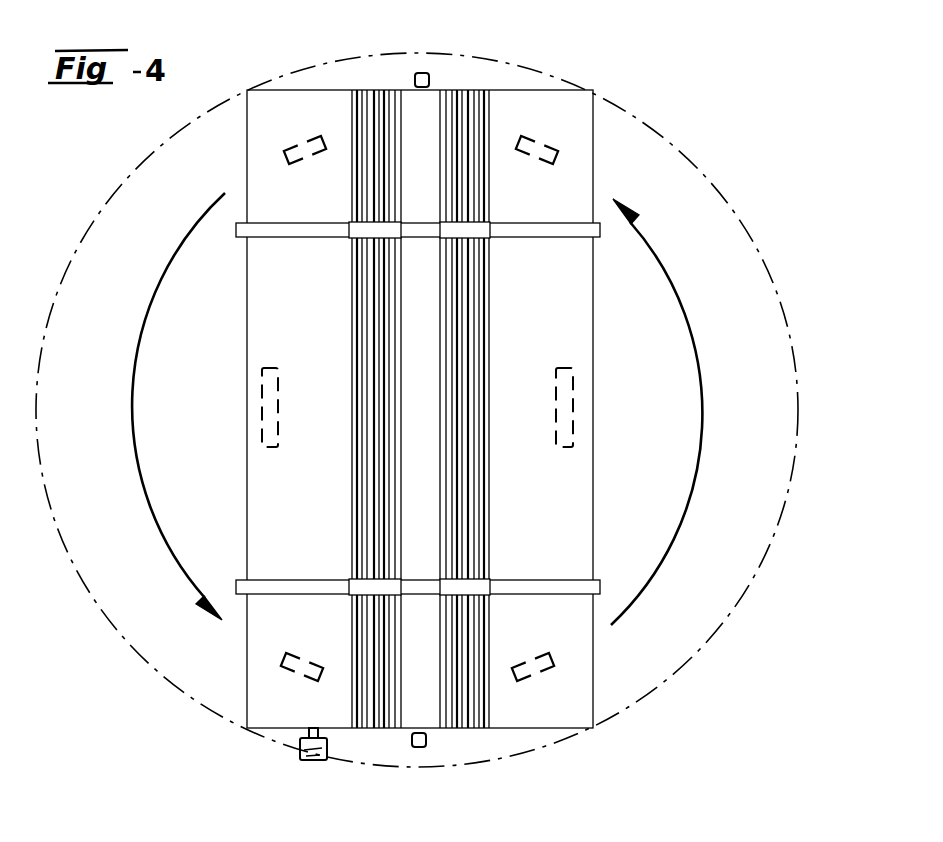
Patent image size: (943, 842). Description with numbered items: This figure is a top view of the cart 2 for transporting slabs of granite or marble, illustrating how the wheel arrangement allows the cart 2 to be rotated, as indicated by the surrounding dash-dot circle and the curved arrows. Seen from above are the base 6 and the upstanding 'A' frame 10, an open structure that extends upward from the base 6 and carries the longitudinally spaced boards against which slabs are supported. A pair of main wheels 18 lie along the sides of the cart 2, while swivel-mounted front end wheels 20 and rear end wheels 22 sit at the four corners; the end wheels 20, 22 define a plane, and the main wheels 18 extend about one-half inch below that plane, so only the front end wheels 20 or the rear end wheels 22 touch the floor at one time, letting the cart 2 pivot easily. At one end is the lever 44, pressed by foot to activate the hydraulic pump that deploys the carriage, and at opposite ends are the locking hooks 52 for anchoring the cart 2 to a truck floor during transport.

The cart 2 is at (428, 460).
The base 6 is at (590, 653).
The 'A' frame 10 is at (438, 698).
The main wheels 18 is at (640, 400).
The front end wheels 20 is at (547, 147).
The rear end wheels 22 is at (642, 747).
The lever 44 is at (302, 758).
The locking hooks 52 is at (421, 749).